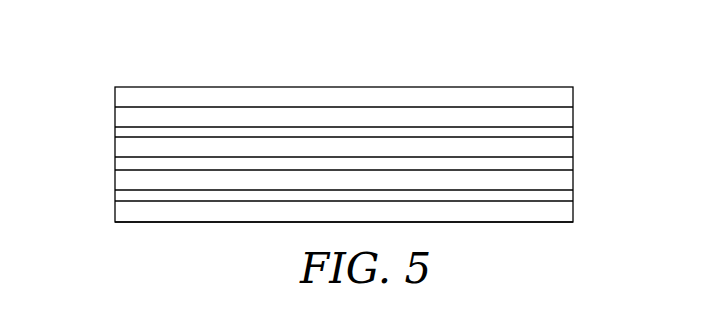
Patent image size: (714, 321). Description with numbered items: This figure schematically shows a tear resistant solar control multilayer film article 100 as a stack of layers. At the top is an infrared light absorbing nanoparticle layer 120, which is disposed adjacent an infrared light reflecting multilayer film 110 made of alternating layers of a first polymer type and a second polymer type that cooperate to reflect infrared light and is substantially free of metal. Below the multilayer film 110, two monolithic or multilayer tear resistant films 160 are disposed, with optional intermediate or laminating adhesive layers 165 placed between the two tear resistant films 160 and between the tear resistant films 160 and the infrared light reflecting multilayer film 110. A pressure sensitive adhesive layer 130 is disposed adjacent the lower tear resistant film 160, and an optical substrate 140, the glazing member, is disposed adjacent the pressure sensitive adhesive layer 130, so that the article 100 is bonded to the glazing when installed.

The tear resistant solar control multilayer film article 100 is at (525, 58).
The infrared light reflecting multilayer film 110 is at (563, 118).
The infrared light absorbing nanoparticle layer 120 is at (122, 96).
The pressure sensitive adhesive layer 130 is at (122, 196).
The optical substrate 140 is at (563, 213).
The tear resistant film 160 is at (563, 153).
The laminating adhesive layer 165 is at (122, 135).